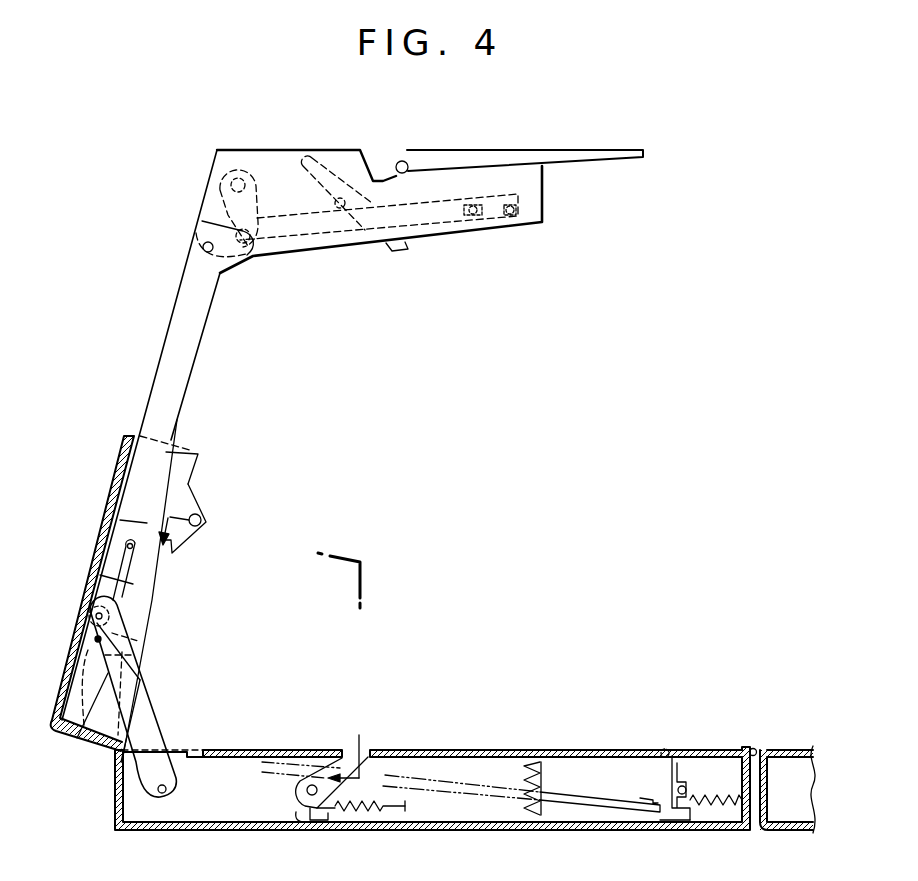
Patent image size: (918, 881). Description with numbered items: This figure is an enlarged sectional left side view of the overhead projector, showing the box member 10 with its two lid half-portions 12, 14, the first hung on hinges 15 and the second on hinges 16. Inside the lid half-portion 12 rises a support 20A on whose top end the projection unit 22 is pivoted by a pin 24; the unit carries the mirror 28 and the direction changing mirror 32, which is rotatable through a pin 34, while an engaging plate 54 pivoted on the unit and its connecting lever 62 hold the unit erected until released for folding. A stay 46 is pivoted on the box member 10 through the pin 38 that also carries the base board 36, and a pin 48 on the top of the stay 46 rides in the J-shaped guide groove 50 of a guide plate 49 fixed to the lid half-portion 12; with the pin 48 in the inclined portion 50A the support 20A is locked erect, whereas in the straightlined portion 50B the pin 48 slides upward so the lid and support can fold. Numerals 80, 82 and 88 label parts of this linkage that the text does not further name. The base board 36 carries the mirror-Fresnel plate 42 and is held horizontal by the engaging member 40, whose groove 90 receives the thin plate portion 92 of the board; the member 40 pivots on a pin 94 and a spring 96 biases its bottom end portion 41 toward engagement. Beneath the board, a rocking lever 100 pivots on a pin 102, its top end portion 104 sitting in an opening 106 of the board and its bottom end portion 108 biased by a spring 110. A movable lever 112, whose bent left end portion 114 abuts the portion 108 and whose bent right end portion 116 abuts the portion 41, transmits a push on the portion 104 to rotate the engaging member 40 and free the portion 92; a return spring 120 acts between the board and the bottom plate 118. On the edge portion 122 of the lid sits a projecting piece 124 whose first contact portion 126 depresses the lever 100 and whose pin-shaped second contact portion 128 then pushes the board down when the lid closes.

The box member 10 is at (110, 805).
The lid half-portion 12 is at (103, 541).
The lid half-portion 14 is at (783, 830).
The hinge 15 is at (110, 754).
The hinge 16 is at (756, 749).
The support 20A is at (173, 363).
The projection unit 22 is at (305, 146).
The pin 24 is at (203, 247).
The mirror 28 is at (337, 180).
The direction changing mirror 32 is at (488, 150).
The pin 34 is at (400, 160).
The base board 36 is at (452, 792).
The pin 38 is at (163, 800).
The engaging member 40 is at (682, 760).
The bottom end portion 41 is at (668, 812).
The mirror-Fresnel plate 42 is at (440, 750).
The stay 46 is at (146, 738).
The pin 48 is at (110, 601).
The guide plate 49 is at (128, 517).
The guide groove 50 is at (140, 584).
The inclined portion 50A is at (145, 630).
The straightlined portion 50B is at (133, 548).
The engaging plate 54 is at (232, 226).
The connecting lever 62 is at (434, 232).
The lever 80 is at (72, 746).
The spring 82 is at (145, 650).
The pivot pin 88 is at (86, 628).
The groove 90 is at (665, 749).
The thin plate portion 92 is at (676, 790).
The pin 94 is at (688, 790).
The spring 96 is at (718, 810).
The rocking lever 100 is at (290, 780).
The pin 102 is at (302, 796).
The top end portion 104 is at (352, 752).
The opening 106 is at (362, 755).
The bottom end portion 108 is at (320, 822).
The spring 110 is at (366, 808).
The movable lever 112 is at (480, 826).
The left end portion 114 is at (300, 814).
The right end portion 116 is at (692, 830).
The bottom plate 118 is at (572, 830).
The return spring 120 is at (553, 768).
The edge portion 122 is at (185, 462).
The projecting piece 124 is at (207, 494).
The first contact portion 126 is at (210, 521).
The second contact portion 128 is at (202, 513).